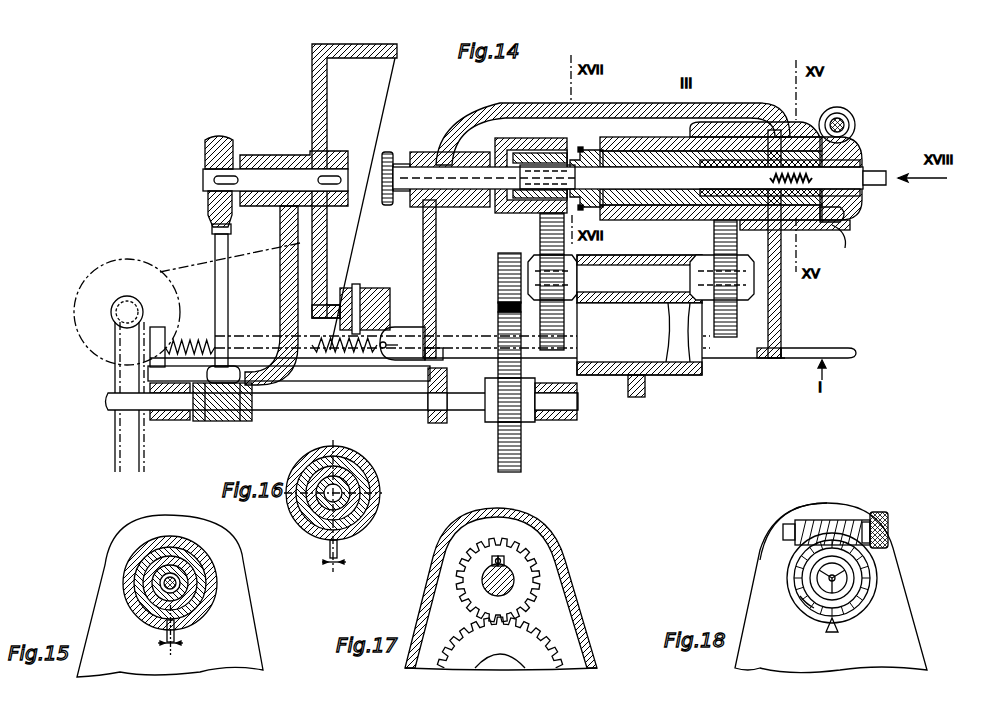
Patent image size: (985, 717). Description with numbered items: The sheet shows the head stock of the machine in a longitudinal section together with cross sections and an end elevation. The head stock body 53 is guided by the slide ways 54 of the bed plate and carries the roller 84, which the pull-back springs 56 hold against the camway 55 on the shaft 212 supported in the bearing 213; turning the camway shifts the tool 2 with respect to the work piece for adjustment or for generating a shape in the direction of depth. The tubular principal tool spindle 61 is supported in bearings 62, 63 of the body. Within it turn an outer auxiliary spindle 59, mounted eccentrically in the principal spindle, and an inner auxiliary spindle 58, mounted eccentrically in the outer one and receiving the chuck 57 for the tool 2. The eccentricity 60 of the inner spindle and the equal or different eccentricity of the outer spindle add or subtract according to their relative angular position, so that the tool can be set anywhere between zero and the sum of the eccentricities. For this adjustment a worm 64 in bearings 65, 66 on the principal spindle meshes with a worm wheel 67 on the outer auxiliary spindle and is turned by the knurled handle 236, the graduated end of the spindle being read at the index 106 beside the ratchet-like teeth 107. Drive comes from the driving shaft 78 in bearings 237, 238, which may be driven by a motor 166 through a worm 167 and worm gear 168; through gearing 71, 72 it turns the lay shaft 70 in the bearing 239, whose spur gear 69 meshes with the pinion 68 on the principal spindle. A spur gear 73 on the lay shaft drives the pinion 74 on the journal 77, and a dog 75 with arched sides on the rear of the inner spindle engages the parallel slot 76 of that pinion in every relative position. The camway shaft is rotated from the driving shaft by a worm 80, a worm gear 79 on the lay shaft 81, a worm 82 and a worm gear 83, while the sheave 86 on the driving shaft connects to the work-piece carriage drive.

In FIG. 14, the tool 2 is at (876, 186).
In FIG. 15, the tool 2 is at (176, 583).
In FIG. 18, the tool 2 is at (838, 578).
In FIG. 14, the head stock body 53 is at (615, 104).
In FIG. 17, the head stock body 53 is at (554, 534).
In FIG. 18, the head stock body 53 is at (836, 508).
In FIG. 14, the slide ways 54 is at (846, 352).
In FIG. 14, the camway 55 is at (392, 108).
In FIG. 14, the springs 56 is at (188, 340).
In FIG. 14, the chuck 57 is at (856, 200).
In FIG. 15, the chuck 57 is at (182, 576).
In FIG. 18, the chuck 57 is at (846, 586).
In FIG. 14, the inner auxiliary spindle 58 is at (852, 160).
In FIG. 15, the inner auxiliary spindle 58 is at (190, 565).
In FIG. 16, the inner auxiliary spindle 58 is at (362, 486).
In FIG. 17, the inner auxiliary spindle 58 is at (512, 580).
In FIG. 18, the inner auxiliary spindle 58 is at (854, 564).
In FIG. 14, the outer auxiliary spindle 59 is at (846, 222).
In FIG. 15, the outer auxiliary spindle 59 is at (200, 602).
In FIG. 16, the outer auxiliary spindle 59 is at (356, 508).
In FIG. 18, the outer auxiliary spindle 59 is at (800, 560).
In FIG. 15, the eccentricity 60 is at (176, 644).
In FIG. 16, the eccentricity 60 is at (340, 548).
In FIG. 14, the principal tool spindle 61 is at (830, 224).
In FIG. 15, the principal tool spindle 61 is at (148, 548).
In FIG. 16, the principal tool spindle 61 is at (366, 526).
In FIG. 18, the principal tool spindle 61 is at (794, 572).
In FIG. 14, the bearing 62 is at (632, 140).
In FIG. 14, the bearing 63 is at (792, 112).
In FIG. 15, the bearing 63 is at (178, 550).
In FIG. 16, the bearing 63 is at (360, 478).
In FIG. 14, the worm 64 is at (852, 112).
In FIG. 18, the worm 64 is at (816, 518).
In FIG. 18, the bearing 65 is at (788, 522).
In FIG. 18, the bearing 66 is at (868, 518).
In FIG. 14, the worm wheel 67 is at (850, 145).
In FIG. 18, the worm wheel 67 is at (860, 602).
In FIG. 14, the pinion 68 is at (692, 262).
In FIG. 14, the spur gear 69 is at (737, 243).
In FIG. 14, the lay shaft 70 is at (642, 276).
In FIG. 14, the gearing 71 is at (498, 465).
In FIG. 14, the gearing 72 is at (496, 262).
In FIG. 14, the spur gear 73 is at (566, 306).
In FIG. 17, the spur gear 73 is at (555, 638).
In FIG. 14, the pinion 74 is at (522, 214).
In FIG. 17, the pinion 74 is at (536, 560).
In FIG. 14, the dog 75 is at (578, 150).
In FIG. 17, the dog 75 is at (503, 558).
In FIG. 14, the slot 76 is at (530, 150).
In FIG. 17, the slot 76 is at (494, 558).
In FIG. 14, the journal 77 is at (464, 200).
In FIG. 14, the driving shaft 78 is at (372, 411).
In FIG. 14, the worm gear 79 is at (240, 421).
In FIG. 14, the worm 80 is at (268, 387).
In FIG. 14, the lay shaft 81 is at (214, 282).
In FIG. 14, the worm 82 is at (230, 226).
In FIG. 14, the worm gear 83 is at (228, 138).
In FIG. 14, the roller 84 is at (372, 287).
In FIG. 14, the sheave, sprocket or pulley 86 is at (432, 424).
In FIG. 14, the index 106 is at (854, 247).
In FIG. 18, the index 106 is at (838, 620).
In FIG. 18, the ratchet tooth 107 is at (806, 600).
In FIG. 14, the motor 166 is at (128, 260).
In FIG. 14, the worm 167 is at (112, 302).
In FIG. 14, the worm gear 168 is at (146, 462).
In FIG. 14, the shaft 212 is at (270, 172).
In FIG. 14, the bearing 213 is at (284, 154).
In FIG. 18, the knurled handle 236 is at (890, 522).
In FIG. 14, the bearing 237 is at (170, 420).
In FIG. 14, the bearing 238 is at (578, 411).
In FIG. 14, the bearing 239 is at (672, 345).